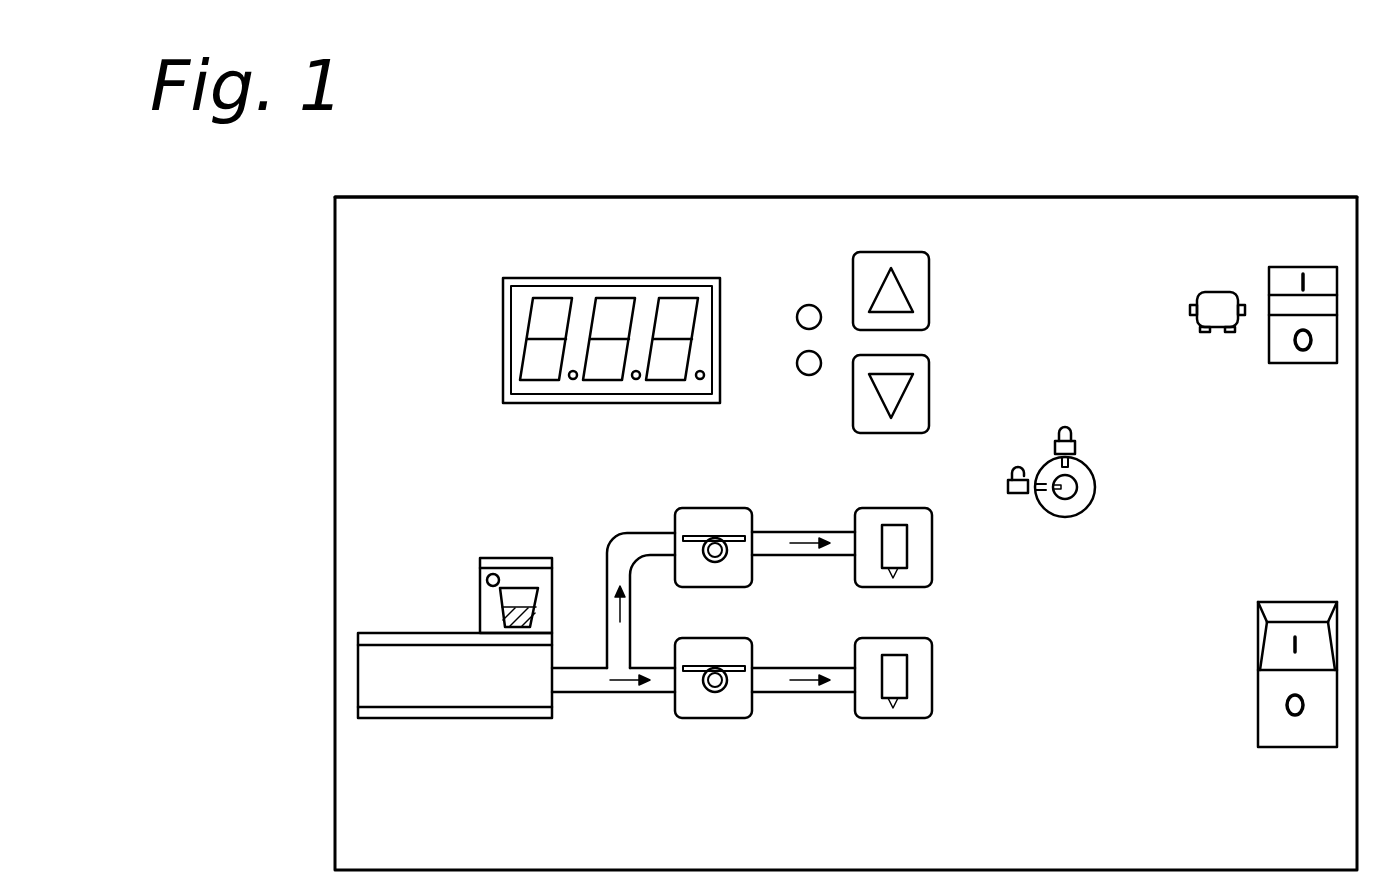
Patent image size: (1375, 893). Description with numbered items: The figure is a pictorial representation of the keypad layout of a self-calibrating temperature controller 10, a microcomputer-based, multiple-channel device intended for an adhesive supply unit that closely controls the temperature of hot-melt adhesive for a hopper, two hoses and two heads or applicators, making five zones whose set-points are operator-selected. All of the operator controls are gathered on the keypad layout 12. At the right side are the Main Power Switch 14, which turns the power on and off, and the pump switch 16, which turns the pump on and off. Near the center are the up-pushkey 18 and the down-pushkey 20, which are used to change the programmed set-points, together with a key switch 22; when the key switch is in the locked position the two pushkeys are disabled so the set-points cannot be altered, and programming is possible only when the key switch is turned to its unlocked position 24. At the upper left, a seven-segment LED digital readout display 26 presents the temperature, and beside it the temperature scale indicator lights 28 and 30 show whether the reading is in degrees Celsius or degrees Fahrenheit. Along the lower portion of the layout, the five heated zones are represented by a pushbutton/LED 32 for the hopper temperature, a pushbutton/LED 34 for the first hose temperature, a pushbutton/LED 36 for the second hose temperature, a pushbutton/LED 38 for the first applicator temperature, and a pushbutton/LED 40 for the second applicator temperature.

The temperature controller 10 is at (912, 176).
The keypad layout 12 is at (485, 197).
The Main Power Switch 14 is at (1258, 621).
The pump switch 16 is at (1269, 281).
The up-pushkey 18 is at (929, 263).
The down-pushkey 20 is at (929, 366).
The key switch 22 is at (1030, 442).
The unlocked position 24 is at (1008, 470).
The seven-segment LED digital readout display 26 is at (513, 266).
The temperature scale indicator light (degrees Celsius) 28 is at (800, 307).
The temperature scale indicator light (degrees Fahrenheit) 30 is at (802, 374).
The pushbutton/LED for hopper temperature 32 is at (522, 558).
The pushbutton/LED for first hose temperature 34 is at (675, 513).
The pushbutton/LED for second hose temperature 36 is at (678, 646).
The pushbutton/LED for first applicator temperature 38 is at (857, 513).
The pushbutton/LED for second applicator temperature 40 is at (857, 643).